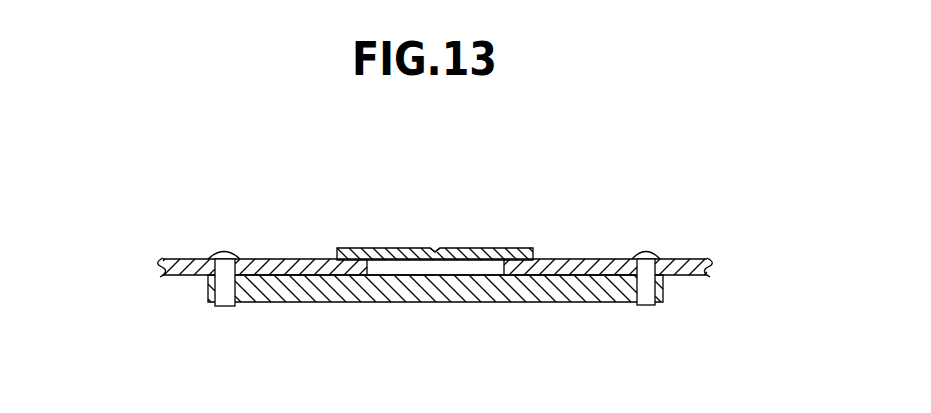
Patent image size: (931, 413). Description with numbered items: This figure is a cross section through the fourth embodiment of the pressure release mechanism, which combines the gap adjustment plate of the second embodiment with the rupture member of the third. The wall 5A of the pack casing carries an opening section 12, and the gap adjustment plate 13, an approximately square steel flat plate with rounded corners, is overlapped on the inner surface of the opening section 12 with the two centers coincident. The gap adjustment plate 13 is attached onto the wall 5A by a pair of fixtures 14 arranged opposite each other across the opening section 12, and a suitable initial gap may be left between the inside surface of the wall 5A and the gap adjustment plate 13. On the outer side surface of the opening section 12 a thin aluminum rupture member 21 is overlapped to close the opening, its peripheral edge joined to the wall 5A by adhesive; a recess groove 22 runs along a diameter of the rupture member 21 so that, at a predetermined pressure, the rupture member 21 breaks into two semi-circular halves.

The wall 5A is at (592, 259).
The gap adjustment plate 13 is at (542, 302).
The opening section 12 is at (470, 263).
The rupture member 21 is at (352, 248).
The recess groove 22 is at (436, 249).
The fixtures 14 is at (226, 252).